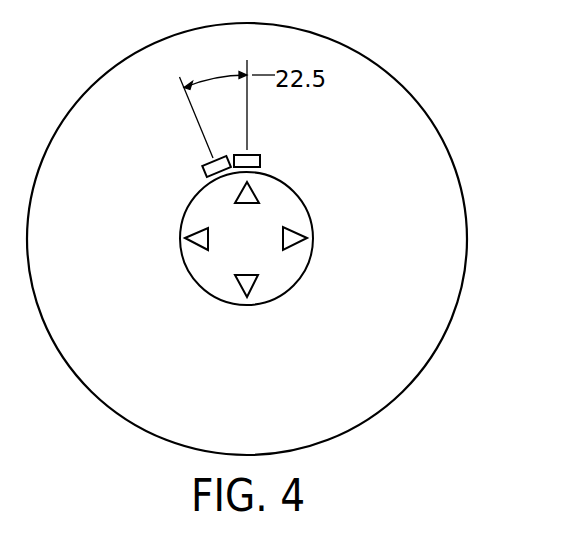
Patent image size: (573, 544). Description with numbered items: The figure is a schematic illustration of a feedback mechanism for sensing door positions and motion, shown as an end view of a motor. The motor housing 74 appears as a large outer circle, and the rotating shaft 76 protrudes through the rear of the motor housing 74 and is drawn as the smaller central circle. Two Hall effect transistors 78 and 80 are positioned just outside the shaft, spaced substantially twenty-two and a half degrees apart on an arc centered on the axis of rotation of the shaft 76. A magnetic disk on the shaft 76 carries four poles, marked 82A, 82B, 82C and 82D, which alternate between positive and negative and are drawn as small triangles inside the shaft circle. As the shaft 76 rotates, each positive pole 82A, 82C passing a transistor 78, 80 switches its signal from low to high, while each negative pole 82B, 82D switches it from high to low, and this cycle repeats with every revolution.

The motor housing 74 is at (433, 122).
The rotating shaft 76 is at (315, 252).
The Hall effect transistor 78 is at (260, 157).
The Hall effect transistor 80 is at (202, 170).
The positive pole 82A is at (250, 193).
The negative pole 82B is at (295, 237).
The positive pole 82C is at (248, 283).
The negative pole 82D is at (200, 237).